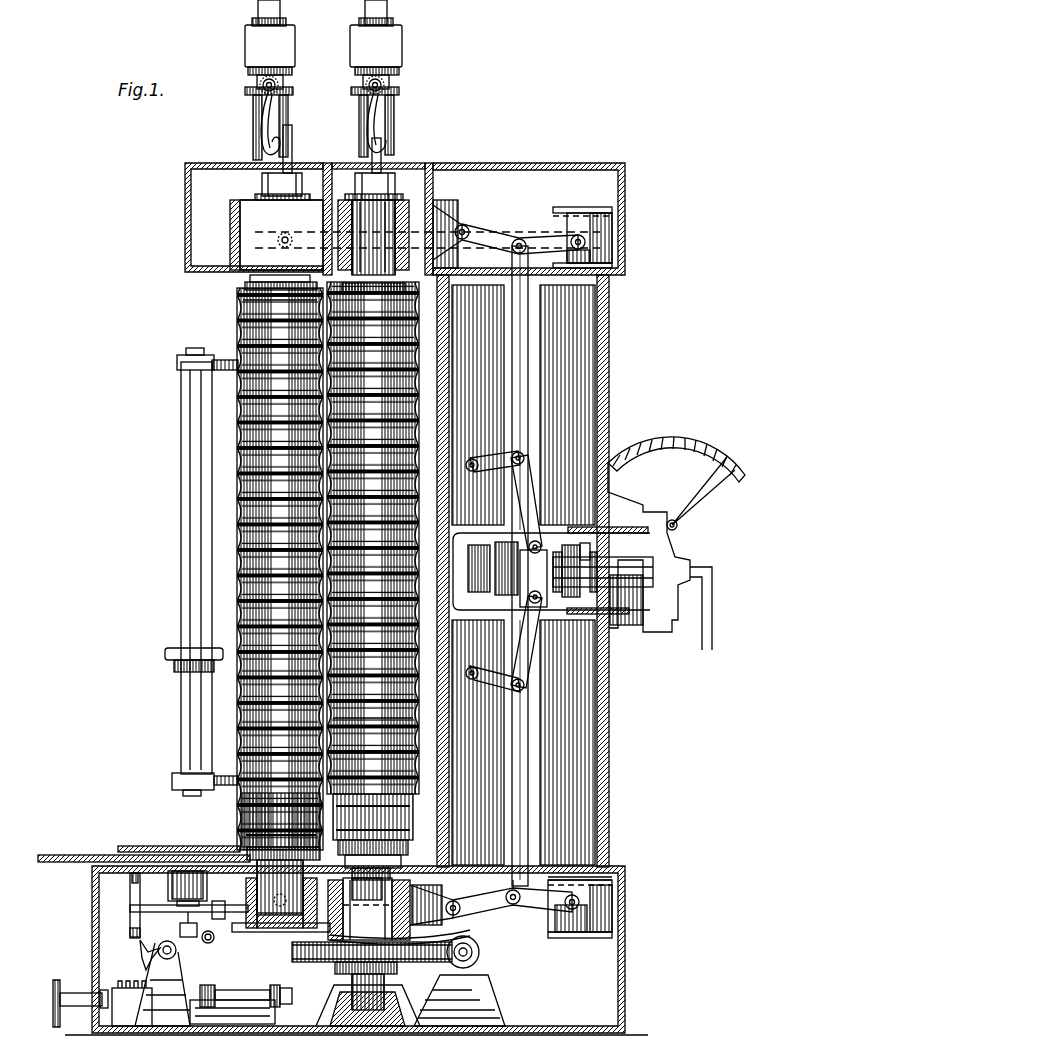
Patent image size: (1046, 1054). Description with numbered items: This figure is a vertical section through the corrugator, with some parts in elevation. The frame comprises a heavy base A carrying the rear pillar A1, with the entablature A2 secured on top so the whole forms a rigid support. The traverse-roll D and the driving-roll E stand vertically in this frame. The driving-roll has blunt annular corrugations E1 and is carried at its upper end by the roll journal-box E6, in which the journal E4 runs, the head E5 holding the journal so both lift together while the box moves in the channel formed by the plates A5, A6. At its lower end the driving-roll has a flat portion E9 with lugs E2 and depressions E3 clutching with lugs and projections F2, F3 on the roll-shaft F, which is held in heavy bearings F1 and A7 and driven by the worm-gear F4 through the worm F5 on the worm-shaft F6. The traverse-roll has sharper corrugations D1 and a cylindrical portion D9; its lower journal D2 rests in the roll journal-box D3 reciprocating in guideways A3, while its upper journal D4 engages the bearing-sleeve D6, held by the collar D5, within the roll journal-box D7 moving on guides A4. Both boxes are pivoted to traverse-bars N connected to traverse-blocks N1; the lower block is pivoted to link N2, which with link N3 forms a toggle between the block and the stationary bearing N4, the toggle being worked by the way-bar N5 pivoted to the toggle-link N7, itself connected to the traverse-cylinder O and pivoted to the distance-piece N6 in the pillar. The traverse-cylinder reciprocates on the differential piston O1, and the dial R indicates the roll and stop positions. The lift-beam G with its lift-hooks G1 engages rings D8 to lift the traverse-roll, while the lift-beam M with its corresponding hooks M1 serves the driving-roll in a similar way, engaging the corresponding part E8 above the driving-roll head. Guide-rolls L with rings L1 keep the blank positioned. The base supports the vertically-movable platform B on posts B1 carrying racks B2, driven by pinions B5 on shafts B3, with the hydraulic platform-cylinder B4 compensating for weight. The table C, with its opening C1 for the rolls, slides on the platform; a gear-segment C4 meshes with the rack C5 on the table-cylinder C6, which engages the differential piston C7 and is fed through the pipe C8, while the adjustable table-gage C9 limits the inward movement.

The base A is at (625, 956).
The pillar A1 is at (608, 712).
The entablature A2 is at (622, 216).
The guideways A3 is at (270, 932).
The guides A4 is at (208, 272).
The plate A5 is at (328, 166).
The plate A6 is at (430, 168).
The bearing A7 is at (470, 933).
The platform B is at (56, 862).
The posts B1 is at (130, 877).
The racks B2 is at (130, 932).
The shafts B3 is at (182, 924).
The hydraulic platform-cylinder B4 is at (180, 882).
The pinions B5 is at (130, 908).
The table C is at (138, 846).
The opening C1 is at (232, 846).
The gear-segment C4 is at (140, 956).
The rack C5 is at (138, 988).
The table-cylinder C6 is at (208, 992).
The differential piston C7 is at (248, 992).
The pipe C8 is at (290, 990).
The table-gage C9 is at (78, 995).
The traverse-roll D is at (262, 326).
The corrugations D1 is at (246, 310).
The journal D2 is at (266, 876).
The roll journal-box D3 is at (220, 943).
The journal D4 is at (268, 290).
The collar D5 is at (270, 194).
The bearing-sleeve D6 is at (245, 216).
The roll journal-box D7 is at (232, 232).
The rings D8 is at (292, 145).
The cylindrical portion D9 is at (246, 822).
The driving-roll E is at (413, 332).
The corrugations E1 is at (412, 722).
The lugs E2 is at (402, 858).
The depressions E3 is at (410, 842).
The journal E4 is at (430, 200).
The head E5 is at (392, 198).
The roll journal-box E6 is at (465, 226).
The rod E8 is at (382, 150).
The flat portion E9 is at (412, 804).
The roll-shaft F is at (369, 910).
The bearing F1 is at (340, 1000).
The lugs F2 is at (367, 891).
The projections F3 is at (367, 915).
The worm-gear F4 is at (432, 963).
The worm F5 is at (478, 950).
The worm-shaft F6 is at (470, 958).
The lift-beam G is at (255, 43).
The lift-hooks G1 is at (258, 126).
The guide-rolls L is at (188, 430).
The rings L1 is at (176, 650).
The lift-beam M is at (395, 43).
The hook M1 is at (392, 120).
The traverse-bars N is at (519, 238).
The traverse-blocks N1 is at (596, 934).
The link N2 is at (545, 890).
The link N3 is at (498, 890).
The stationary bearing N4 is at (456, 905).
The way-bar N5 is at (528, 380).
The distance-piece N6 is at (496, 456).
The toggle-link N7 is at (533, 496).
The traverse-cylinder O is at (551, 570).
The differential piston O1 is at (632, 580).
The dial R is at (674, 444).